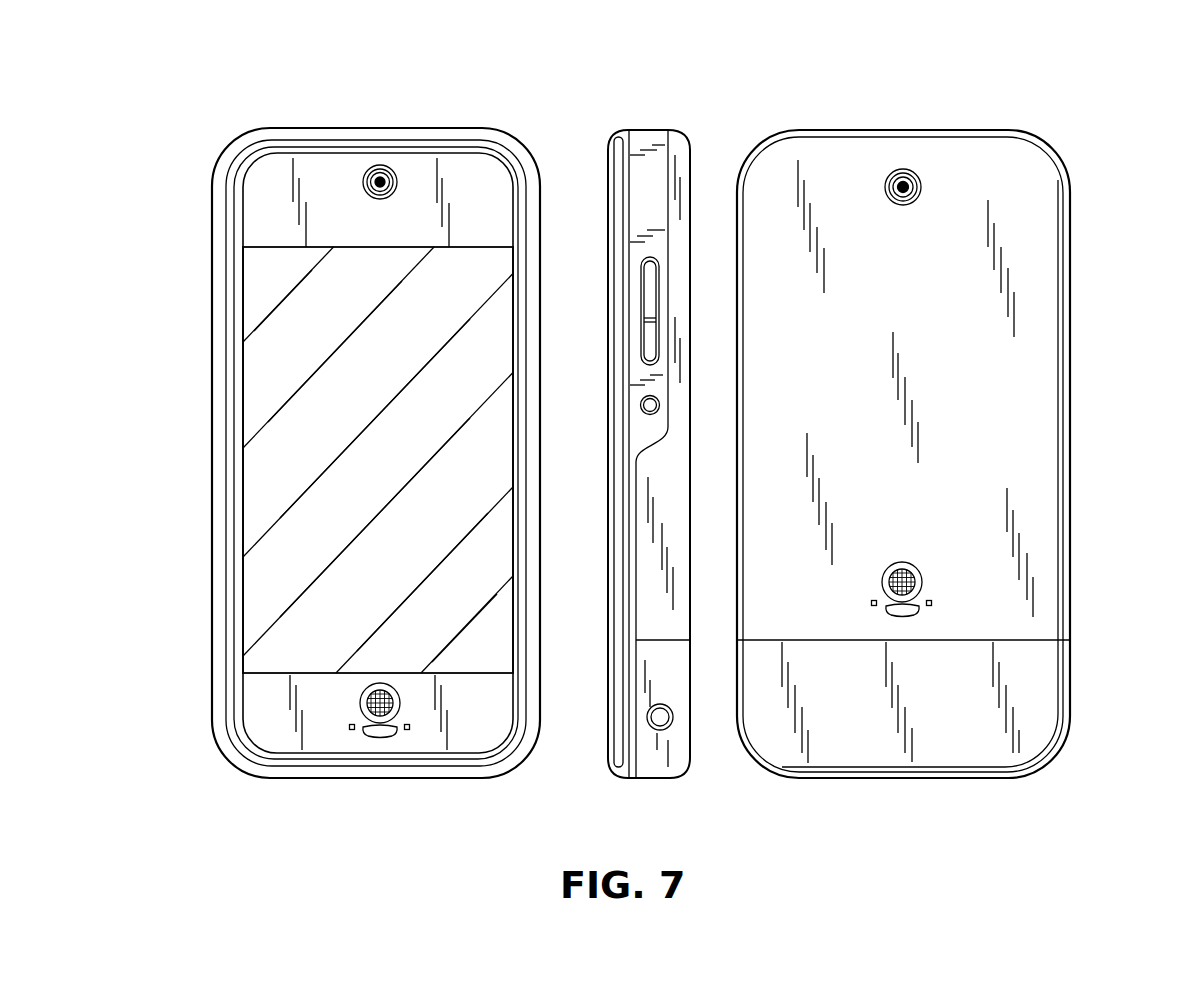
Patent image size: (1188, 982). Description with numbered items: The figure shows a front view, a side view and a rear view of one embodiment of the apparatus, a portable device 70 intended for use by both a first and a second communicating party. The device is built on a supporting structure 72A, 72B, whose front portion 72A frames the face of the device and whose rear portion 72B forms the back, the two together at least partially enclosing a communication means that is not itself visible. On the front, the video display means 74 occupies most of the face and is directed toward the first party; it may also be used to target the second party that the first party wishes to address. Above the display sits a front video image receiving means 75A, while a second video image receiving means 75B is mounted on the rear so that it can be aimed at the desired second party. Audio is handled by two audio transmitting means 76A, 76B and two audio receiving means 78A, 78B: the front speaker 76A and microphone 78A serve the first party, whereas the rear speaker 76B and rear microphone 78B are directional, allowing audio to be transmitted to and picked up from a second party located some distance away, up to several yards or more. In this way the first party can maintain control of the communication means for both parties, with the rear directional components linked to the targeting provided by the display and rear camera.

The portable device 70 is at (375, 104).
The supporting structure 72A is at (253, 197).
The supporting structure 72B is at (677, 166).
The video display means 74 is at (263, 392).
The video image receiving means 75A is at (387, 170).
The video image receiving means 75B is at (909, 172).
The audio transmitting means 76A is at (392, 712).
The audio transmitting means 76B is at (915, 587).
The audio receiving means 78A is at (377, 738).
The audio receiving means 78B is at (907, 615).